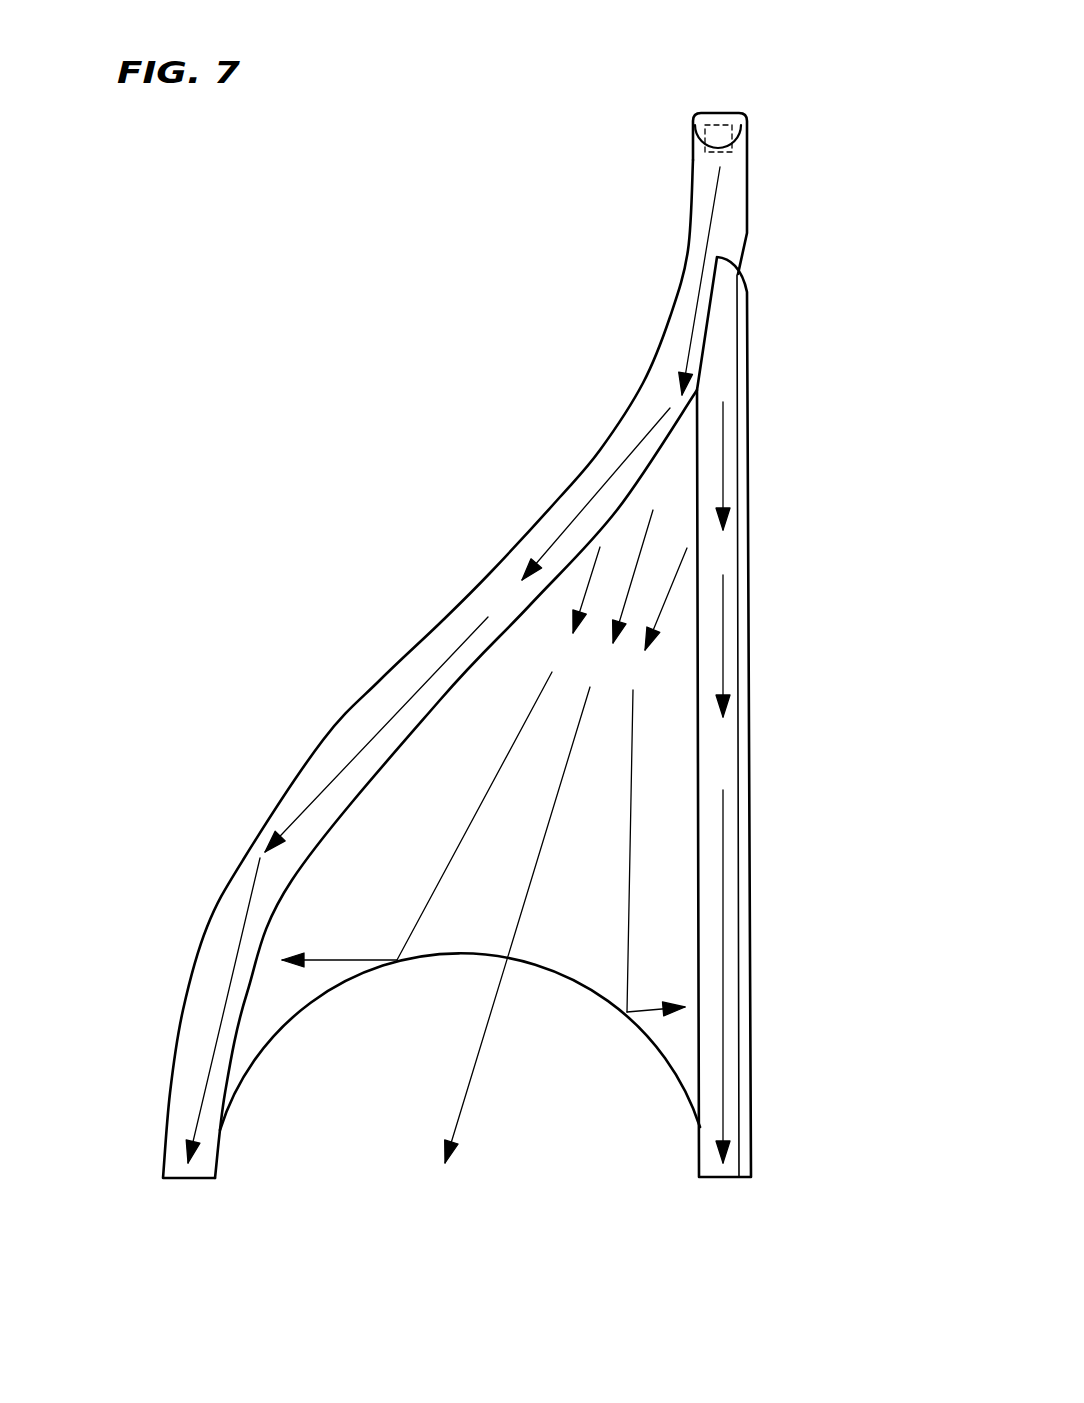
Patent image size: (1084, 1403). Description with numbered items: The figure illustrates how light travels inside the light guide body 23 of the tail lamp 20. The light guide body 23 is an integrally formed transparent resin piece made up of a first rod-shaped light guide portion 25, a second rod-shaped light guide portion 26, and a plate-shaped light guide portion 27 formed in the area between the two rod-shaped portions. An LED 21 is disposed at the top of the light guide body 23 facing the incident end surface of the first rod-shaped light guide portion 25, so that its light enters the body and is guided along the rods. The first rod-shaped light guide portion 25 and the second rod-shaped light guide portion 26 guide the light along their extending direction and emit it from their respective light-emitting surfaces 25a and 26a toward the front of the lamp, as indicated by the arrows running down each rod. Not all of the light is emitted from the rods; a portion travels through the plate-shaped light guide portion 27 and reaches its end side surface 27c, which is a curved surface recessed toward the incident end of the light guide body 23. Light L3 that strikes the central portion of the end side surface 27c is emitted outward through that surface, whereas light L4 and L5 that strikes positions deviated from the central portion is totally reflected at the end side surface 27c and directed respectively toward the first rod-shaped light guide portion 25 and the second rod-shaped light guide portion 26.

The tail lamp 20 is at (450, 450).
The LED 21 is at (728, 141).
The light guide body 23 is at (747, 233).
The first rod-shaped light guide portion 25 is at (408, 650).
The light-emitting surface 25a is at (498, 597).
The second rod-shaped light guide portion 26 is at (750, 603).
The light-emitting surface 26a is at (723, 755).
The plate-shaped light guide portion 27 is at (412, 788).
The end side surface 27c is at (437, 955).
The light L3 is at (522, 905).
The light L4 is at (440, 880).
The light L5 is at (630, 885).